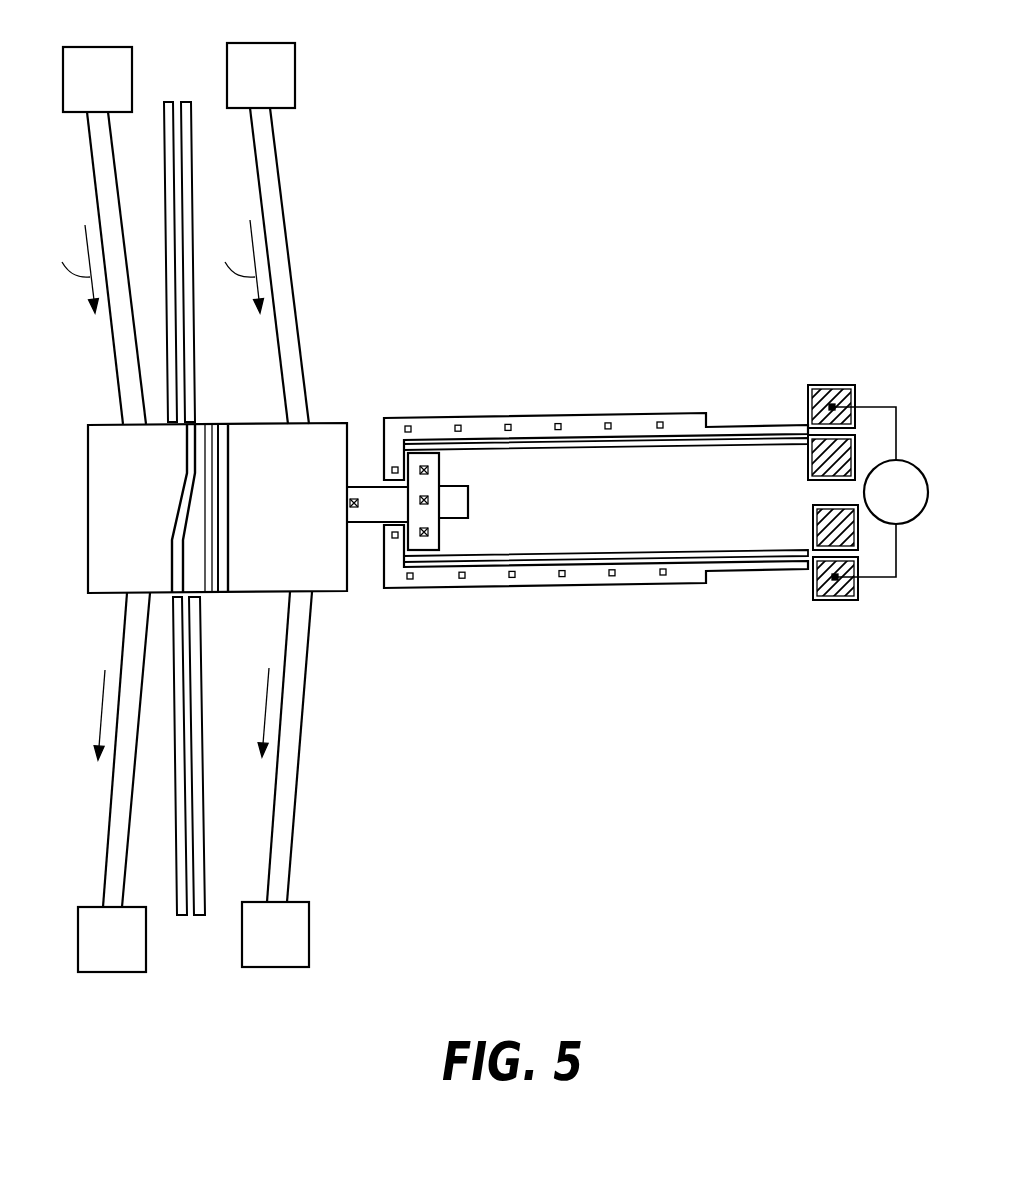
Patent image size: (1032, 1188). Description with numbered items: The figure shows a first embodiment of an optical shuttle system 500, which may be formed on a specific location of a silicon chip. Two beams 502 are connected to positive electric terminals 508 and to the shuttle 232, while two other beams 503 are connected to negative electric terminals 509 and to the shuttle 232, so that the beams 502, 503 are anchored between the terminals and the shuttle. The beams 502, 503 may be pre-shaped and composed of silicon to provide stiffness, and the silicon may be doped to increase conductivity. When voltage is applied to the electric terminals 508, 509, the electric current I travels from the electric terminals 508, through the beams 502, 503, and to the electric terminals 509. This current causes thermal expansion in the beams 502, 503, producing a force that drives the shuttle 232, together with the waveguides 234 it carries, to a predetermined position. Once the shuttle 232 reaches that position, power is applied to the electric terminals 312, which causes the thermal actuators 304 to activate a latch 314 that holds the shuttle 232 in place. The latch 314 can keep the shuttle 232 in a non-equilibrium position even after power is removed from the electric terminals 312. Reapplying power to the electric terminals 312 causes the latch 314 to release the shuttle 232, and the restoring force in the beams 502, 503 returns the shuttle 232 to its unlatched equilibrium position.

The optical shuttle system 500 is at (598, 186).
The electric terminals 508 is at (122, 68).
The beams 502 is at (277, 201).
The shuttle 232 is at (343, 452).
The waveguides 234 is at (178, 515).
The beams 503 is at (293, 607).
The electric terminals 509 is at (146, 938).
The thermal actuators 304 is at (530, 418).
The latch 314 is at (468, 498).
The electric terminals 312 is at (827, 392).